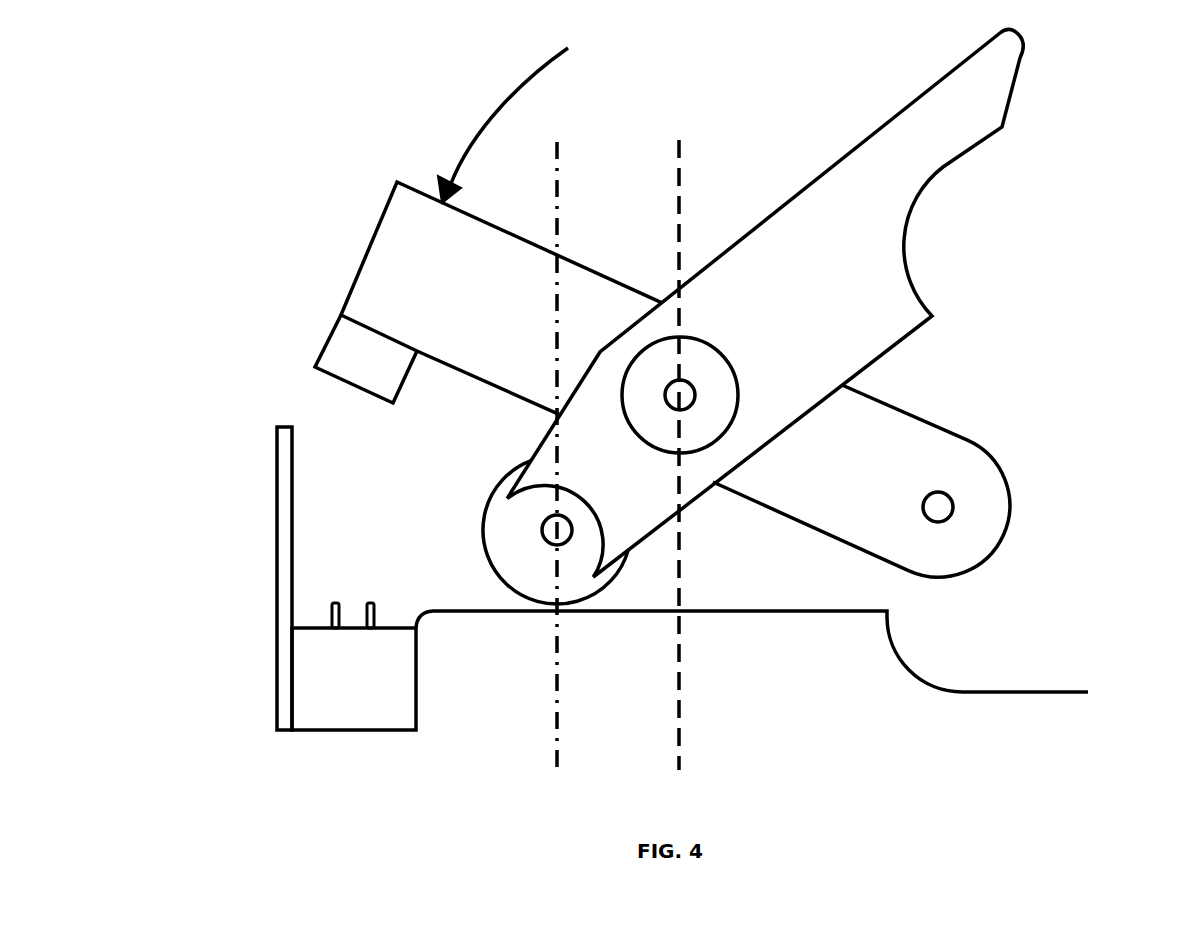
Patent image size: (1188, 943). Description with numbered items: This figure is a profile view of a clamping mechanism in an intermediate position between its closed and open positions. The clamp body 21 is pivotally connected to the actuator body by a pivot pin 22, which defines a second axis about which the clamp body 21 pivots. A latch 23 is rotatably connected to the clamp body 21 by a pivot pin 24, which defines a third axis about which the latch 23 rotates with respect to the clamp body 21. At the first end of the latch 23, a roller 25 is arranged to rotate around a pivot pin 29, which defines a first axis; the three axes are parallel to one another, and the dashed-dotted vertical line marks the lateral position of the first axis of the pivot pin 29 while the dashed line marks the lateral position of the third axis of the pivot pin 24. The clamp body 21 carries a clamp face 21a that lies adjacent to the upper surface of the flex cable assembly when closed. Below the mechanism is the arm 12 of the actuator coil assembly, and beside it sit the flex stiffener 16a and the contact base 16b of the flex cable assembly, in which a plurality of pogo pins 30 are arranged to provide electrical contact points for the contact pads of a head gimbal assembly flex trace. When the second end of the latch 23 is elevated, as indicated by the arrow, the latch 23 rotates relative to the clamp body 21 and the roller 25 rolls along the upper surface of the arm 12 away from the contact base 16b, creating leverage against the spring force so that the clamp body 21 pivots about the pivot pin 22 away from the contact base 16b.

The arm 12 is at (860, 739).
The flex stiffener 16a is at (277, 657).
The contact base 16b is at (355, 732).
The clamp body 21 is at (383, 213).
The clamp face 21a is at (333, 332).
The pivot pin 22 is at (938, 492).
The latch 23 is at (865, 138).
The pivot pin 24 is at (681, 390).
The roller 25 is at (495, 486).
The pivot pin 29 is at (553, 543).
The pogo pins 30 is at (334, 603).